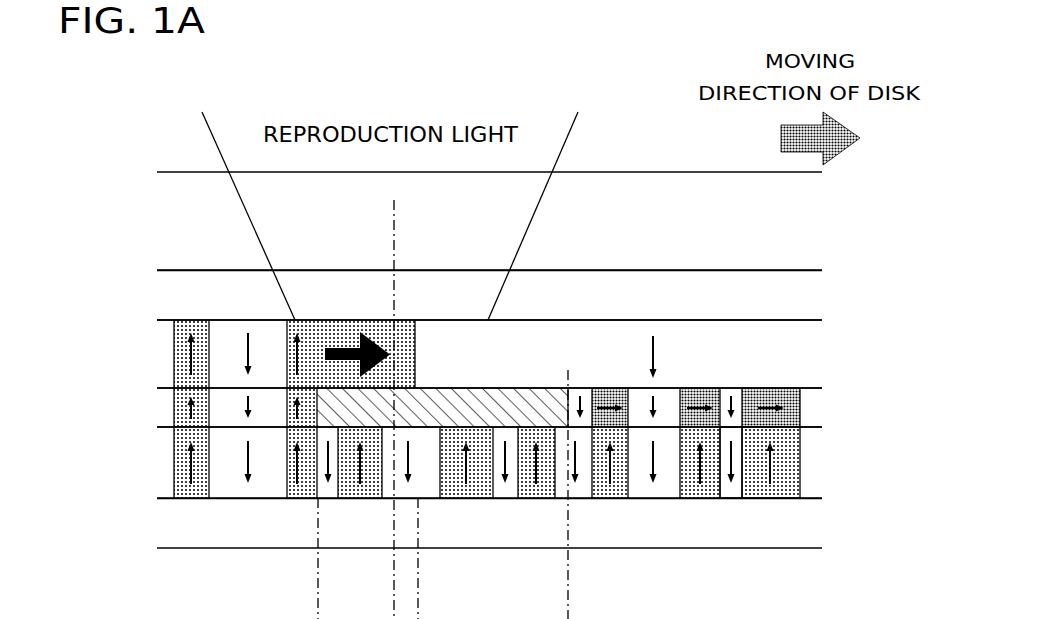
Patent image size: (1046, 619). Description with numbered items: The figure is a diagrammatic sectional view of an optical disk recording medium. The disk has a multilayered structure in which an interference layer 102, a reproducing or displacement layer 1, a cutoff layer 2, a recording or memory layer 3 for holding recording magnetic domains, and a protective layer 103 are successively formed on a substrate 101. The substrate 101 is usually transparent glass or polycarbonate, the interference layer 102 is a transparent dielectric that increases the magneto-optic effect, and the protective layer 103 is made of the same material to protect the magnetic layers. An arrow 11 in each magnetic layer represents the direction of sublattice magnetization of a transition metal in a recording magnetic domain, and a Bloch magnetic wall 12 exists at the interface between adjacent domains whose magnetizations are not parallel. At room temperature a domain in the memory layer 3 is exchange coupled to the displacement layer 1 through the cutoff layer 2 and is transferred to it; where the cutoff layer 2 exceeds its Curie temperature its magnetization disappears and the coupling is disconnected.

The substrate 101 is at (522, 221).
The interference layer 102 is at (522, 296).
The displacement layer 1 is at (522, 354).
The cutoff layer 2 is at (522, 407).
The memory layer 3 is at (522, 521).
The protective layer 103 is at (522, 524).
The Bloch magnetic wall 12 is at (762, 500).
The arrow 11 is at (770, 475).